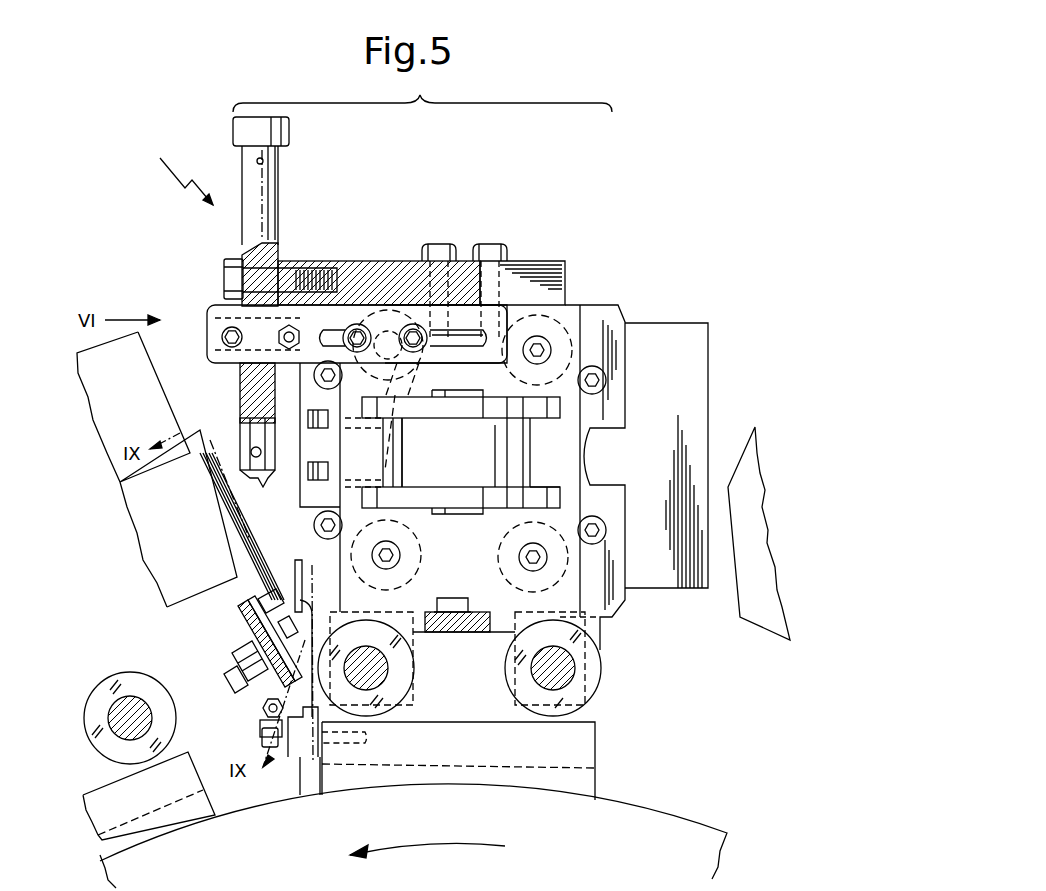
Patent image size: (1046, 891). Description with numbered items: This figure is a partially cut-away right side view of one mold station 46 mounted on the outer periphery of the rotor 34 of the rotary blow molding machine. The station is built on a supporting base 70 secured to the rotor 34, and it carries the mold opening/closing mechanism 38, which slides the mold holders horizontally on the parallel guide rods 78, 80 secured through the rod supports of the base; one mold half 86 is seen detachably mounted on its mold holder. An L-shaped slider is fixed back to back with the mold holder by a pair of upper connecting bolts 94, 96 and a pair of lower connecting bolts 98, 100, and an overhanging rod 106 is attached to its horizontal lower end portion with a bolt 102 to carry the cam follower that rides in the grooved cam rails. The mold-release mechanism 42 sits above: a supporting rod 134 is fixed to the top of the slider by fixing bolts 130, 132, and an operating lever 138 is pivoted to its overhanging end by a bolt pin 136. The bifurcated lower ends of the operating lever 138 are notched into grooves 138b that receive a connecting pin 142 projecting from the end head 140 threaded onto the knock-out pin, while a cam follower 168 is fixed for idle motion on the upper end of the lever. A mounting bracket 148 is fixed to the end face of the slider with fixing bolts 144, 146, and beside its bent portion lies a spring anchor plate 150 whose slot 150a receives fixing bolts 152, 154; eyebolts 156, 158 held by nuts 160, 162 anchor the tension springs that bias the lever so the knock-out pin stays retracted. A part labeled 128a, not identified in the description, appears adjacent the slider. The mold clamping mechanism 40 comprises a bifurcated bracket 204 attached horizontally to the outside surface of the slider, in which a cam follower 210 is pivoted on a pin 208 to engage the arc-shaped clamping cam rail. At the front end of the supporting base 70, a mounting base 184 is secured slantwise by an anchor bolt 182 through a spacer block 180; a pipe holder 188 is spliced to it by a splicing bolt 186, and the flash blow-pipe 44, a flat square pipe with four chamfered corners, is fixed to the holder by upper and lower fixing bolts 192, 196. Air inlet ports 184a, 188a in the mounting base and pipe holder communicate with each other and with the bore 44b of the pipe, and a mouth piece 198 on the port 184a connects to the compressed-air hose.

The rotor 34 is at (665, 838).
The mold opening/closing mechanism 38 is at (452, 590).
The mold clamping mechanism 40 is at (596, 462).
The mold-release mechanism 42 is at (174, 169).
The flash blow-pipe 44 is at (222, 520).
The bore 44b is at (255, 597).
The mold station 46 is at (422, 91).
The supporting base 70 is at (157, 795).
The guide rod 78 is at (372, 668).
The guide rod 80 is at (560, 668).
The mold half 86 is at (672, 336).
The connecting bolt 94 is at (416, 452).
The connecting bolt 96 is at (540, 348).
The connecting bolt 98 is at (387, 560).
The connecting bolt 100 is at (535, 557).
The bolt 102 is at (460, 606).
The overhanging rod 106 is at (470, 632).
The cylinder body 128a is at (452, 452).
The fixing bolt 130 is at (437, 248).
The fixing bolt 132 is at (488, 248).
The supporting rod 134 is at (395, 270).
The bolt pin 136 is at (226, 278).
The operating lever 138 is at (273, 170).
The groove 138b is at (263, 486).
The end head 140 is at (255, 440).
The connecting pin 142 is at (262, 450).
The fixing bolt 144 is at (312, 415).
The fixing bolt 146 is at (312, 472).
The mounting bracket 148 is at (335, 442).
The spring anchor plate 150 is at (465, 330).
The slot 150a is at (470, 340).
The fixing bolt 152 is at (357, 324).
The fixing bolt 154 is at (413, 324).
The eyebolt 156 is at (215, 322).
The eyebolt 158 is at (289, 330).
The nut 160 is at (224, 343).
The nut 162 is at (312, 278).
The cam follower 168 is at (245, 128).
The spacer block 180 is at (303, 757).
The anchor bolt 182 is at (262, 742).
The mounting base 184 is at (260, 728).
The air inlet port 184a is at (232, 684).
The splicing bolt 186 is at (235, 662).
The pipe holder 188 is at (243, 626).
The air inlet port 188a is at (252, 646).
The fixing bolt 192 is at (268, 593).
The fixing bolt 196 is at (285, 622).
The mouth piece 198 is at (263, 709).
The bifurcated bracket 204 is at (535, 498).
The pin 208 is at (463, 512).
The cam follower 210 is at (520, 468).